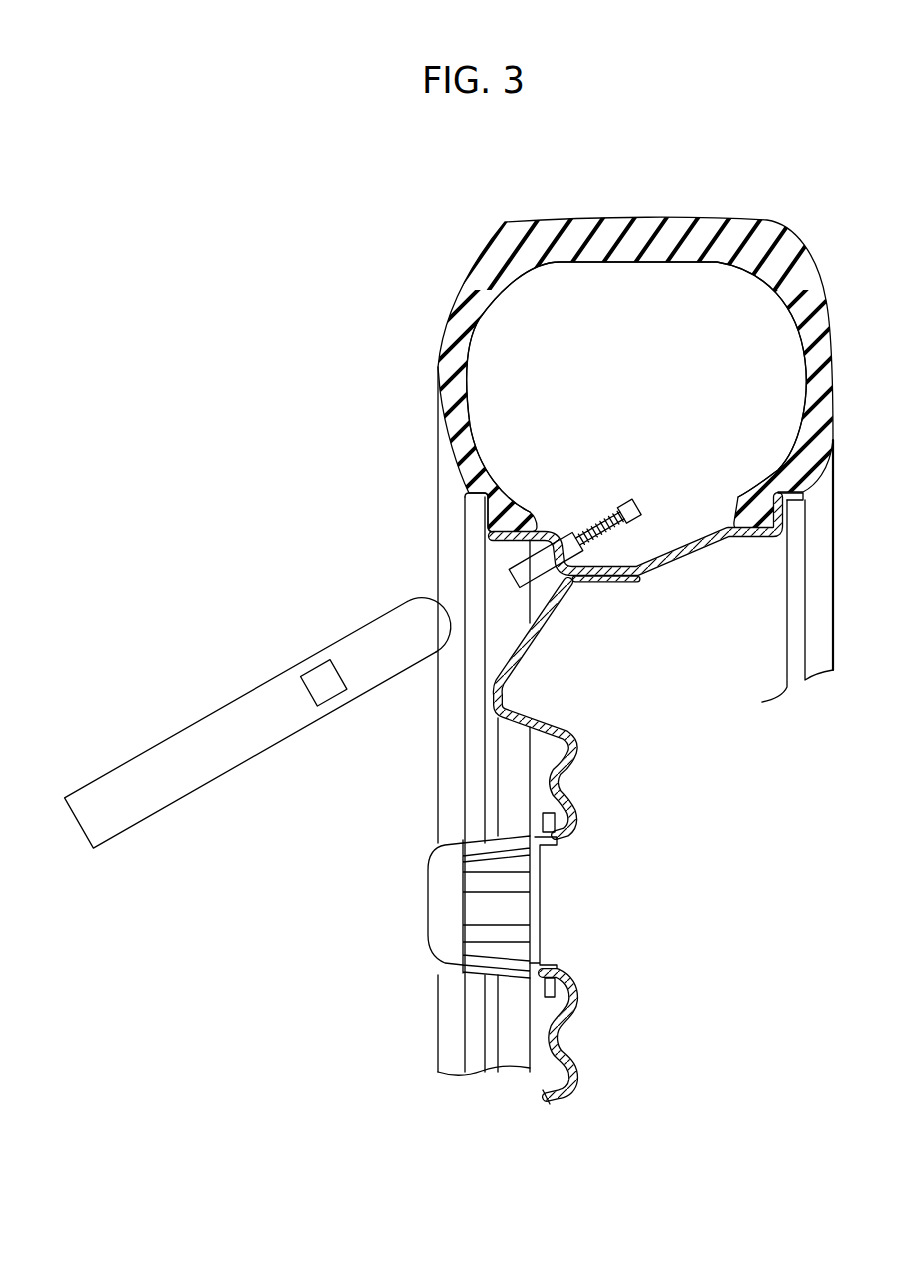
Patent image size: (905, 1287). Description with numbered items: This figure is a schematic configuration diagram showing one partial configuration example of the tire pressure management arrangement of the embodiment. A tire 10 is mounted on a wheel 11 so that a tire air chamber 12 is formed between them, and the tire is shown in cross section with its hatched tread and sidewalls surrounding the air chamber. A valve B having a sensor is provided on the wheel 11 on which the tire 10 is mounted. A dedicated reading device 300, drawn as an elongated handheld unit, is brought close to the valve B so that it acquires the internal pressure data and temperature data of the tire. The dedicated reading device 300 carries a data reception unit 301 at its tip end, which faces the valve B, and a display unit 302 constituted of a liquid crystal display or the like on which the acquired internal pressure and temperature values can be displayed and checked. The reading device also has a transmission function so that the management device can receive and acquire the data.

The tire 10 is at (597, 219).
The tire air chamber 12 is at (685, 282).
The wheel 11 is at (690, 557).
The dedicated reading device 300 is at (146, 750).
The data reception unit 301 is at (447, 611).
The display unit 302 is at (318, 668).
The valve B is at (503, 577).